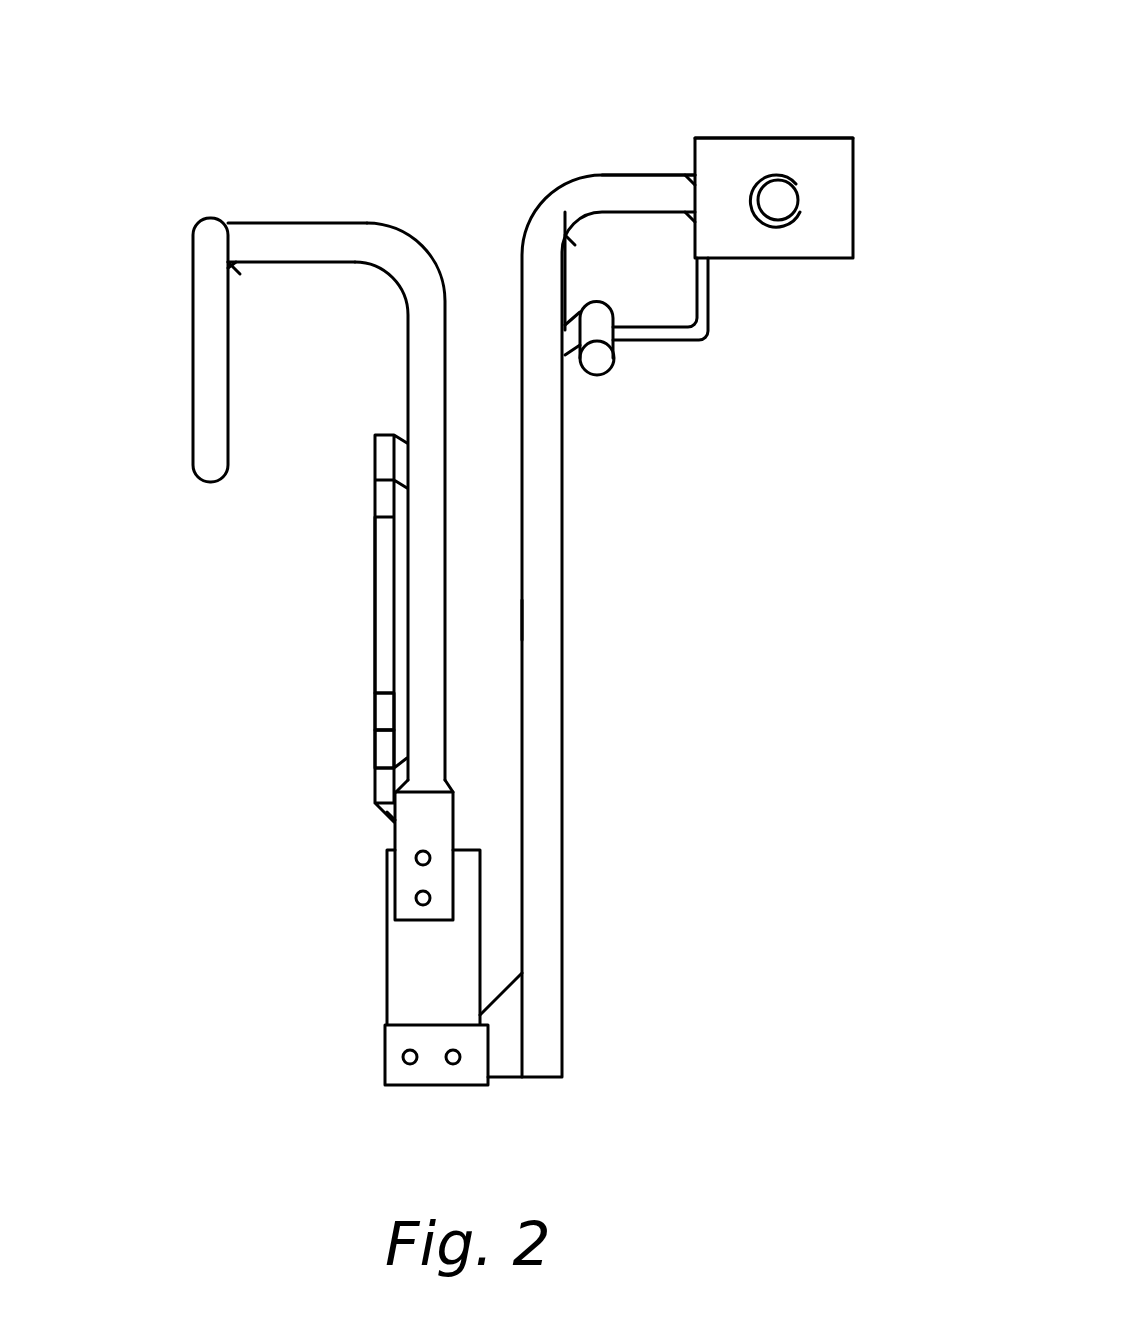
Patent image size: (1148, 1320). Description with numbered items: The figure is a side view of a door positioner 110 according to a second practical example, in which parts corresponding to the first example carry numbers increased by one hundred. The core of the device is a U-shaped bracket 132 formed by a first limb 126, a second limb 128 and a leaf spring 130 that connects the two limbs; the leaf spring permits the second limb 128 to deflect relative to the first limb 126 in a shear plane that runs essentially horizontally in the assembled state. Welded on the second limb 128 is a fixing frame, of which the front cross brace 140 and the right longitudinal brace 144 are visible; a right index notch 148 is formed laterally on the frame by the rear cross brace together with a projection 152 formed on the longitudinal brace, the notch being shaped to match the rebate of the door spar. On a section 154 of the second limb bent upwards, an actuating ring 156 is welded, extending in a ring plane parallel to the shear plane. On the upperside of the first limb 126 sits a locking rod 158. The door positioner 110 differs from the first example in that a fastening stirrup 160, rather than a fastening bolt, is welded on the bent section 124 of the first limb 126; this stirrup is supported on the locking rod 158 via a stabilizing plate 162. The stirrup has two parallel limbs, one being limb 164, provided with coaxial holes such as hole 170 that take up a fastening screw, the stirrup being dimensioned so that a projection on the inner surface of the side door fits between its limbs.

The door positioner 110 is at (222, 133).
The bent section 124 is at (646, 188).
The first limb 126 is at (547, 916).
The second limb 128 is at (418, 371).
The leaf spring 130 is at (415, 975).
The U-shaped bracket 132 is at (590, 595).
The front cross brace 140 is at (378, 460).
The right longitudinal brace 144 is at (383, 592).
The right index notch 148 is at (385, 752).
The projection 152 is at (383, 710).
The section bent upwards 154 is at (313, 243).
The actuating ring 156 is at (208, 385).
The locking rod 158 is at (597, 320).
The fastening stirrup 160 is at (812, 137).
The stabilizing plate 162 is at (697, 320).
The limb of fastening stirrup 164 is at (733, 138).
The hole 170 is at (785, 200).